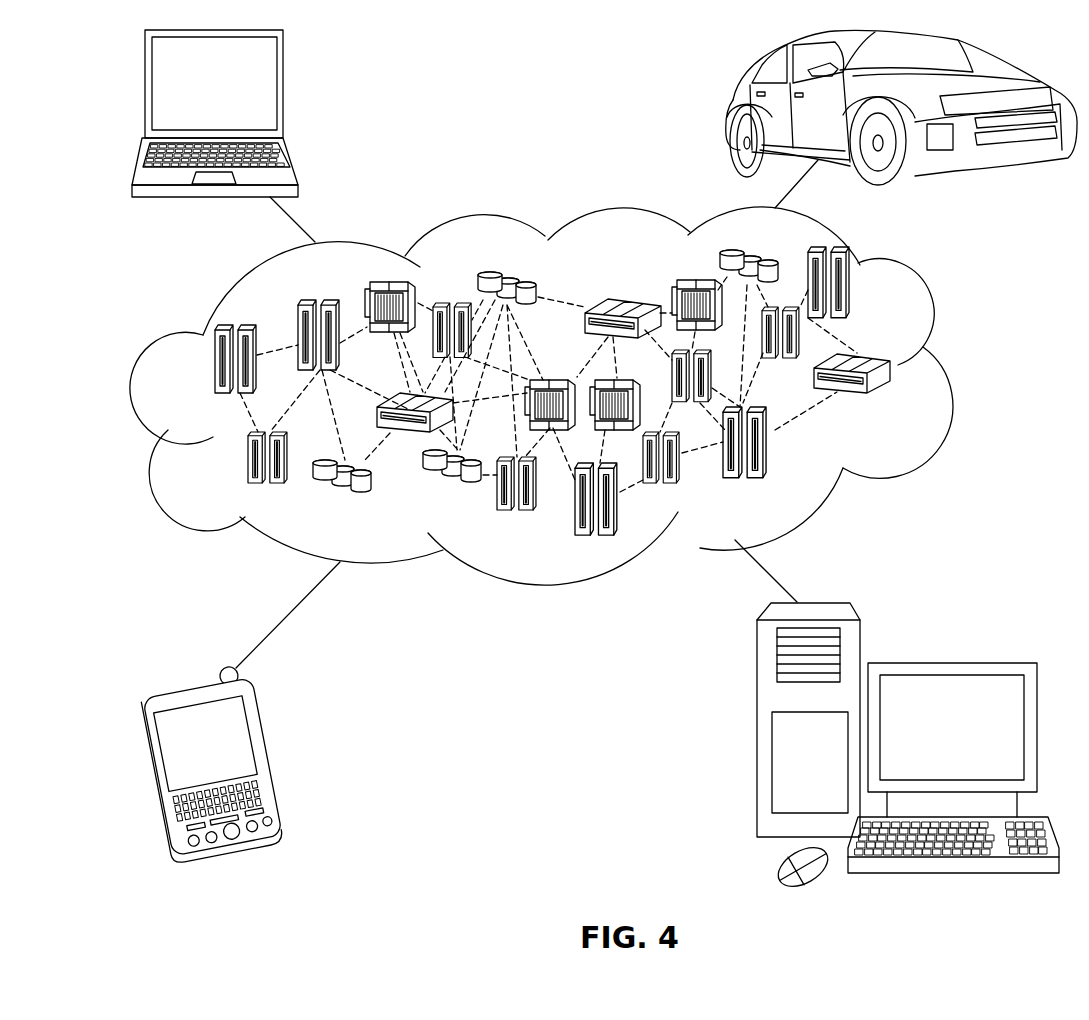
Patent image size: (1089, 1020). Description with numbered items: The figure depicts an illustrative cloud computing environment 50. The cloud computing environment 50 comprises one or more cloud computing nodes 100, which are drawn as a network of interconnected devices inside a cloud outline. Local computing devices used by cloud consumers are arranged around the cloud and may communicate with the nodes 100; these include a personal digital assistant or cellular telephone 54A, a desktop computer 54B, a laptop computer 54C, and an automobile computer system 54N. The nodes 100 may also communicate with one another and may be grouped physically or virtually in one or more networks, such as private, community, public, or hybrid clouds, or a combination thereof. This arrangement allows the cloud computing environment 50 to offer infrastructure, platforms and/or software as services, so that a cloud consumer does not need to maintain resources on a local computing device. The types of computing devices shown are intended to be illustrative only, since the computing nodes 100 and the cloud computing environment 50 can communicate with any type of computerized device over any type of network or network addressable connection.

The cloud computing environment 50 is at (950, 365).
The cloud computing nodes 100 is at (890, 398).
The personal digital assistant or cellular telephone 54A is at (275, 757).
The desktop computer 54B is at (948, 662).
The laptop computer 54C is at (285, 92).
The automobile computer system 54N is at (728, 108).